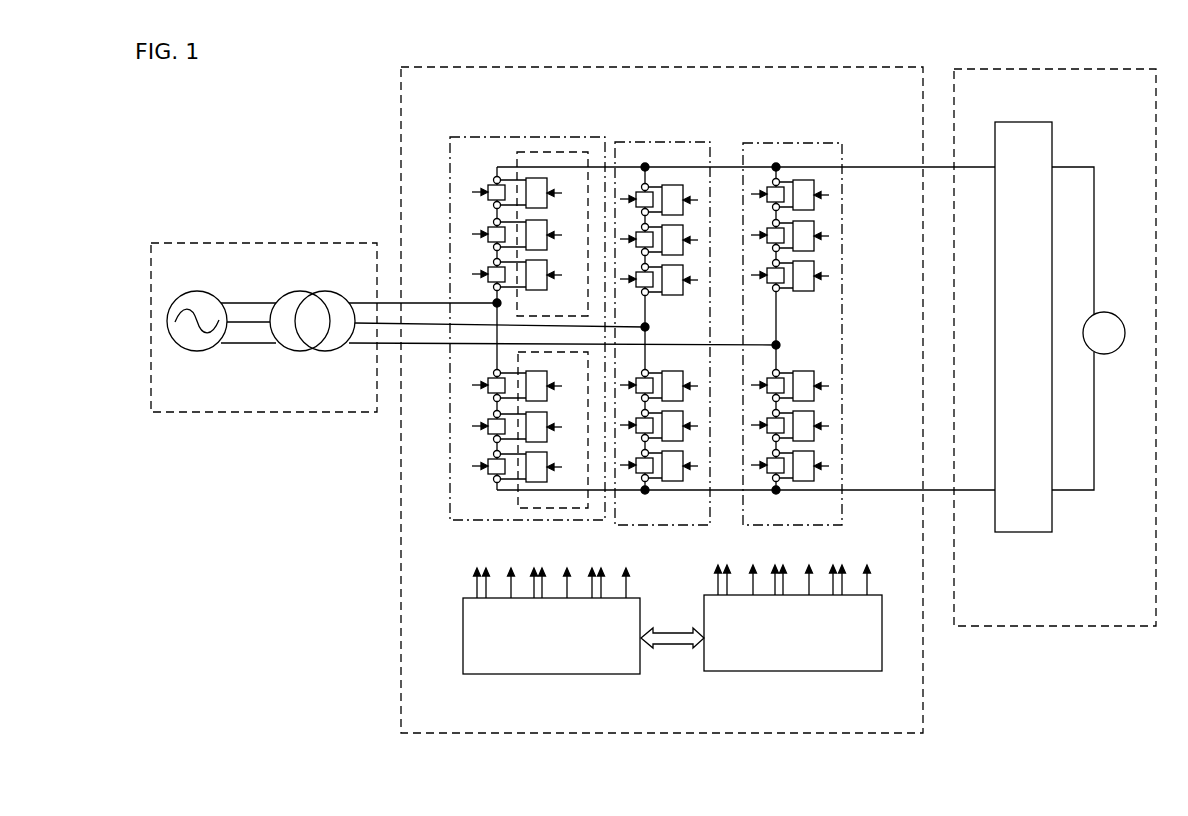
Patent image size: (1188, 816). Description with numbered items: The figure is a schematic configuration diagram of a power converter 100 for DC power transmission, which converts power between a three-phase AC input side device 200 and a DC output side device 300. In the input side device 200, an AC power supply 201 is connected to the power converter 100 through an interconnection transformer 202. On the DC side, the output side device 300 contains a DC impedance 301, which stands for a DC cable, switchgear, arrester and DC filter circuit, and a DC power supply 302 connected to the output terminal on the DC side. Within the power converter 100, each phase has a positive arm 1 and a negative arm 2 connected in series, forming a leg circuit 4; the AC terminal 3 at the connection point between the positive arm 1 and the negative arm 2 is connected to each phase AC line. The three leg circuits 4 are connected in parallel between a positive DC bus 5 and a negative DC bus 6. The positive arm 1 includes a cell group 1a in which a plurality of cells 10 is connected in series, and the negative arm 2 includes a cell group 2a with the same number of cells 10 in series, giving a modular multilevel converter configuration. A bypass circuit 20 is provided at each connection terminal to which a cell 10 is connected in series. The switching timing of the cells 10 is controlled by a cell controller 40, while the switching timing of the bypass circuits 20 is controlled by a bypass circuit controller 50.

The positive arm 1 is at (537, 152).
The cell group 1a is at (552, 234).
The negative arm 2 is at (530, 507).
The cell group 2a is at (553, 430).
The AC terminal 3 is at (497, 303).
The leg circuit 4 is at (573, 137).
The positive DC bus 5 is at (915, 167).
The negative DC bus 6 is at (905, 492).
The cell 10 is at (549, 186).
The bypass circuit 20 is at (491, 188).
The cell controller 40 is at (750, 671).
The bypass circuit controller 50 is at (503, 674).
The power converter 100 is at (451, 104).
The AC input side device 200 is at (201, 274).
The AC power supply 201 is at (195, 351).
The interconnection transformer 202 is at (302, 351).
The DC output side device 300 is at (1004, 104).
The DC impedance 301 is at (1012, 532).
The DC power supply 302 is at (1107, 354).